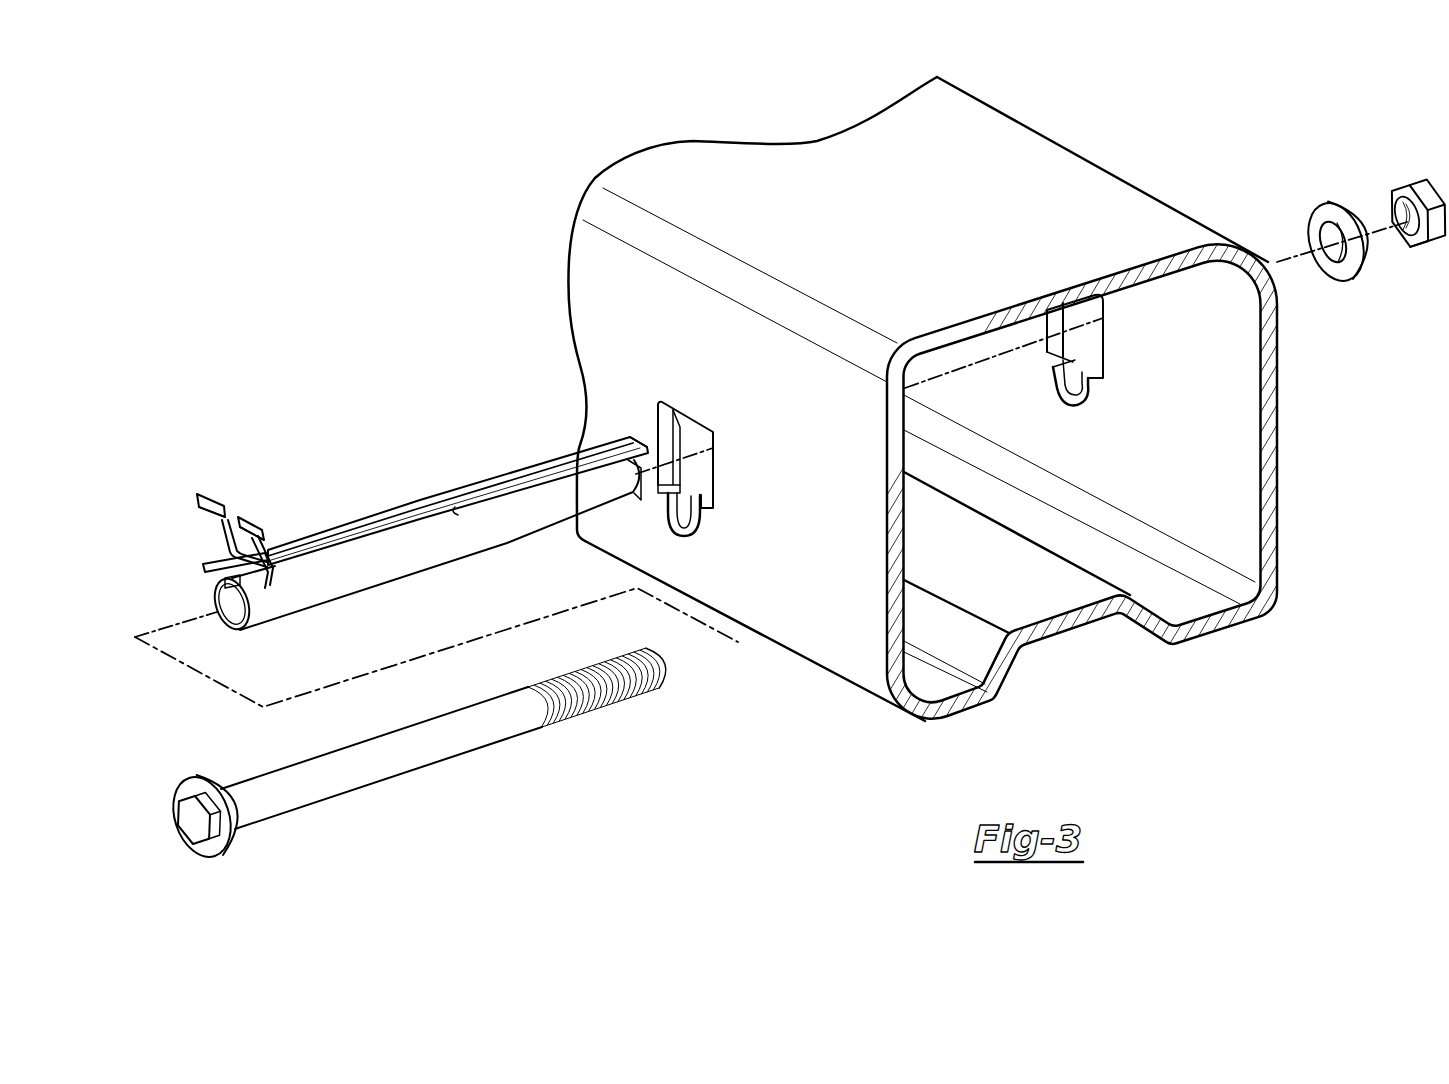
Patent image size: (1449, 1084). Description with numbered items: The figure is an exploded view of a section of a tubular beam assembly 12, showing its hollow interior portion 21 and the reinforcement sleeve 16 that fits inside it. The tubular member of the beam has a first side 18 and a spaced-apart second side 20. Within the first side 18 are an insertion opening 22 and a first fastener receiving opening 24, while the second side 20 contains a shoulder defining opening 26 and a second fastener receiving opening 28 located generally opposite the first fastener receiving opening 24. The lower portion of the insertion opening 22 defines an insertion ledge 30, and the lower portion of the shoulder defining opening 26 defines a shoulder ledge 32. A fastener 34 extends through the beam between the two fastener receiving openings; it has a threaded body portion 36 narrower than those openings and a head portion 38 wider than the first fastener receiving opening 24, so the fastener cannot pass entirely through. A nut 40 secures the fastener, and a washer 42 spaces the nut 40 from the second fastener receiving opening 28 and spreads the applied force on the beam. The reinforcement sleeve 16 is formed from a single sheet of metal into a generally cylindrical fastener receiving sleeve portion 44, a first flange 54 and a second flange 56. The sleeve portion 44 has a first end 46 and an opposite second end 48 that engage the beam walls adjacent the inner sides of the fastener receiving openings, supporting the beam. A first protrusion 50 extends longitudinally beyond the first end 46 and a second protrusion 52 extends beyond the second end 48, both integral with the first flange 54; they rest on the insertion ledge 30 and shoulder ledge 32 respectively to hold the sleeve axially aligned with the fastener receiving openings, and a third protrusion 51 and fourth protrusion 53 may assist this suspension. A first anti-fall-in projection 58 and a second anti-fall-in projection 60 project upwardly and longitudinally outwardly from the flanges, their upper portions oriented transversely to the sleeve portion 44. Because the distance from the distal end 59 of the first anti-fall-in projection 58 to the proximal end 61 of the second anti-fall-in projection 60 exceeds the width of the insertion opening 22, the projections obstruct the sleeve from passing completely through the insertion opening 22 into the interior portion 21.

The tubular beam assembly 12 is at (1008, 391).
The reinforcement sleeve 16 is at (395, 518).
The first side 18 is at (833, 627).
The second side 20 is at (1248, 453).
The interior portion 21 is at (1147, 501).
The insertion opening 22 is at (671, 468).
The first fastener receiving opening 24 is at (688, 537).
The shoulder defining opening 26 is at (1004, 327).
The second fastener receiving opening 28 is at (1060, 394).
The insertion ledge 30 is at (680, 428).
The shoulder ledge 32 is at (1045, 352).
The fastener 34 is at (387, 756).
The body portion 36 is at (613, 687).
The head portion 38 is at (185, 826).
The nut 40 is at (1408, 188).
The washer 42 is at (1322, 205).
The fastener receiving sleeve portion 44 is at (406, 537).
The first end 46 is at (215, 603).
The second end 48 is at (640, 483).
The first protrusion 50 is at (217, 563).
The third protrusion 51 is at (231, 542).
The second protrusion 52 is at (578, 447).
The fourth protrusion 53 is at (630, 427).
The first flange 54 is at (458, 472).
The second flange 56 is at (456, 508).
The first anti-fall-in projection 58 is at (213, 493).
The distal end 59 is at (197, 498).
The second anti-fall-in projection 60 is at (253, 528).
The proximal end 61 is at (263, 540).